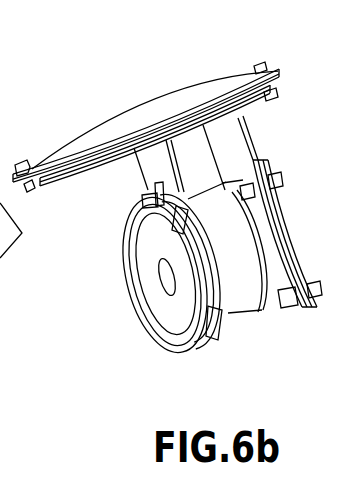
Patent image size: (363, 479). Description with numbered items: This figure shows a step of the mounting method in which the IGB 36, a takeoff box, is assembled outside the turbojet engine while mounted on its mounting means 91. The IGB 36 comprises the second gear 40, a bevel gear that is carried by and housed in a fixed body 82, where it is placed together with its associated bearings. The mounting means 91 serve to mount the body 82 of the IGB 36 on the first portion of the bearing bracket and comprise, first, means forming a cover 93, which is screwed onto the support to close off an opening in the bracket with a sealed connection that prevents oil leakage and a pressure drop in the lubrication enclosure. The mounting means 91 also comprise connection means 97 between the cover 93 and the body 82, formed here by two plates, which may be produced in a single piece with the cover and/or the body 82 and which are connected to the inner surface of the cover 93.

The IGB 36 is at (268, 330).
The second gear 40 is at (192, 308).
The fixed body 82 is at (247, 318).
The mounting means 91 is at (155, 108).
The cover 93 is at (118, 118).
The connection means 97 is at (155, 178).